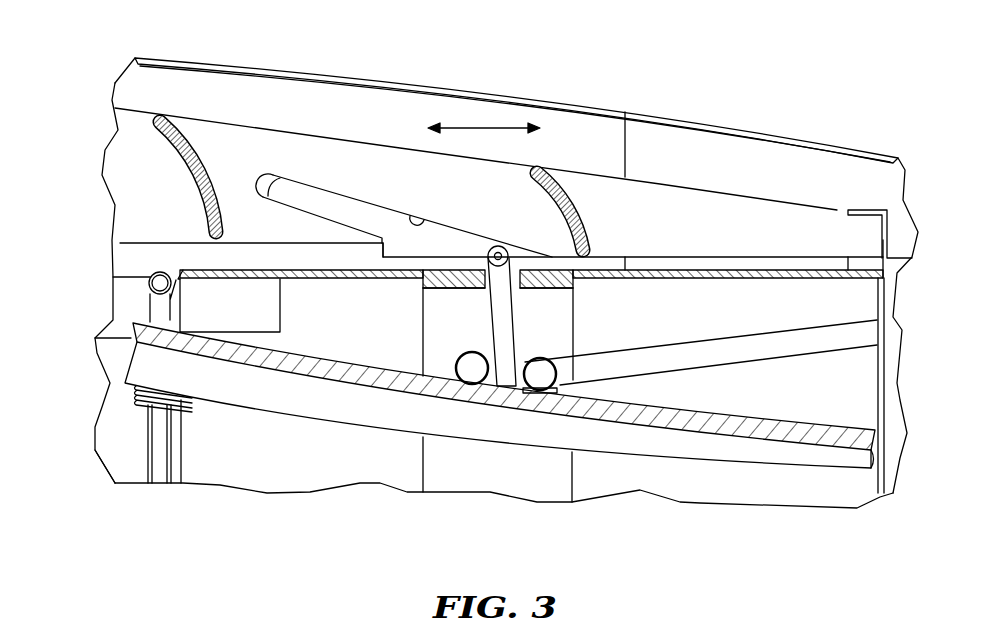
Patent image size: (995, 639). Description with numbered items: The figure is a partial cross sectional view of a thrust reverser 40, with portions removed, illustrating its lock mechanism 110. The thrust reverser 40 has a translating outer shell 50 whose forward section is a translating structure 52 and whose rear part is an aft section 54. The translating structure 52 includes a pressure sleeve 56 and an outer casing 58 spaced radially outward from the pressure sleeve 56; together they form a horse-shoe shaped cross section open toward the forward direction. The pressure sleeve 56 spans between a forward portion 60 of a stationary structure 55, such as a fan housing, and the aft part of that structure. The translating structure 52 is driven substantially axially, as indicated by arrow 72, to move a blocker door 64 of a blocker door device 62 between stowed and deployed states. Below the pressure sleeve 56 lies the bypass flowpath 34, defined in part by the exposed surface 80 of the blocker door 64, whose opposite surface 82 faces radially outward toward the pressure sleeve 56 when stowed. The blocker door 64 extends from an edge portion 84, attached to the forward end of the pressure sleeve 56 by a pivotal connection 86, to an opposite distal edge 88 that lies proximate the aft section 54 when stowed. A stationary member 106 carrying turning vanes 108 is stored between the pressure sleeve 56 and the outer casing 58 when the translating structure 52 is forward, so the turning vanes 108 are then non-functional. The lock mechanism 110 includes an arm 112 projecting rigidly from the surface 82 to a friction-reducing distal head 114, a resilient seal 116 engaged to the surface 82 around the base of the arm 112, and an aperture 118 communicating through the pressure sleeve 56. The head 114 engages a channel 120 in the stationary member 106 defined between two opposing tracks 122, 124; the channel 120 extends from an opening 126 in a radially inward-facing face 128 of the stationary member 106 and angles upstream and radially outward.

The thrust reverser 40 is at (760, 79).
The translating structure 52 is at (572, 98).
The outer casing 58 is at (509, 95).
The stationary member 106 is at (263, 116).
The turning vane 108 is at (182, 152).
The arrow 72 is at (503, 130).
The channel 120 is at (348, 217).
The track 122 is at (268, 184).
The track 124 is at (421, 223).
The opening 126 is at (412, 240).
The face 128 is at (292, 278).
The translating outer shell 50 is at (770, 284).
The pressure sleeve 56 is at (711, 275).
The aft section 54 is at (880, 350).
The aperture 118 is at (490, 290).
The head 114 is at (487, 240).
The arm 112 is at (497, 331).
The resilient seal 116 is at (535, 352).
The lock mechanism 110 is at (393, 307).
The surface 82 is at (665, 420).
The blocker door 64 is at (730, 467).
The distal edge 88 is at (871, 448).
The edge portion 84 is at (137, 360).
The pivotal connection 86 is at (133, 397).
The bypass flowpath 34 is at (263, 463).
The exposed surface 80 is at (538, 454).
The blocker door device 62 is at (657, 515).
The stationary structure 55 is at (99, 484).
The forward portion 60 is at (125, 480).